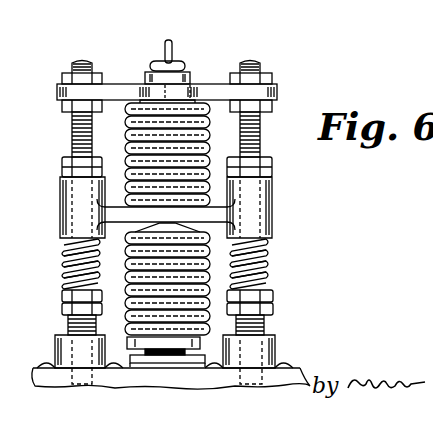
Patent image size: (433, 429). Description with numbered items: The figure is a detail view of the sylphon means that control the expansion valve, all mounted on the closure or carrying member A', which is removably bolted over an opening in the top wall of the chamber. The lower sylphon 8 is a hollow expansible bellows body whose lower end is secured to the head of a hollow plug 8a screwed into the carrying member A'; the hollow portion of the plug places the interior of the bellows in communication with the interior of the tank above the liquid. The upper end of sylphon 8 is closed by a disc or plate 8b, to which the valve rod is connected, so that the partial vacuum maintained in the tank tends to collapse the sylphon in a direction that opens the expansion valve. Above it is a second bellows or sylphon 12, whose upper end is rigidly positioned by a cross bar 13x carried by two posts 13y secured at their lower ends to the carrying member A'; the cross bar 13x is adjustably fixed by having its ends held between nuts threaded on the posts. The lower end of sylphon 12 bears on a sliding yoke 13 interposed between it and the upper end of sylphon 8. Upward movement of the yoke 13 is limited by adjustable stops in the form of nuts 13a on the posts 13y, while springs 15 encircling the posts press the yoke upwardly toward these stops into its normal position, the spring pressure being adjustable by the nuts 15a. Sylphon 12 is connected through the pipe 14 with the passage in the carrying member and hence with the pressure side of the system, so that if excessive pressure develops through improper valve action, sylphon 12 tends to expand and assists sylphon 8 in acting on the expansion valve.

The pipe 14 is at (165, 48).
The cross bar 13x is at (215, 92).
The posts 13y is at (74, 133).
The nuts 13a is at (286, 166).
The sliding yoke 13 is at (245, 216).
The bellows or sylphon 12 is at (198, 156).
The sylphon 8 is at (192, 284).
The disc or plate 8b is at (135, 235).
The hollow plug 8a is at (135, 343).
The springs 15 is at (63, 265).
The nuts 15a is at (285, 306).
The closure or carrying member A' is at (177, 360).